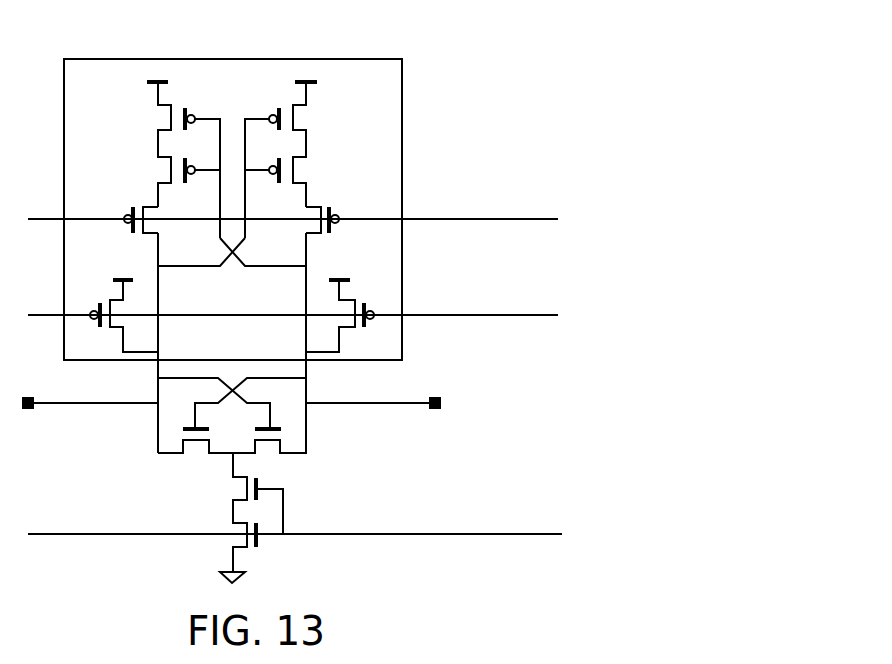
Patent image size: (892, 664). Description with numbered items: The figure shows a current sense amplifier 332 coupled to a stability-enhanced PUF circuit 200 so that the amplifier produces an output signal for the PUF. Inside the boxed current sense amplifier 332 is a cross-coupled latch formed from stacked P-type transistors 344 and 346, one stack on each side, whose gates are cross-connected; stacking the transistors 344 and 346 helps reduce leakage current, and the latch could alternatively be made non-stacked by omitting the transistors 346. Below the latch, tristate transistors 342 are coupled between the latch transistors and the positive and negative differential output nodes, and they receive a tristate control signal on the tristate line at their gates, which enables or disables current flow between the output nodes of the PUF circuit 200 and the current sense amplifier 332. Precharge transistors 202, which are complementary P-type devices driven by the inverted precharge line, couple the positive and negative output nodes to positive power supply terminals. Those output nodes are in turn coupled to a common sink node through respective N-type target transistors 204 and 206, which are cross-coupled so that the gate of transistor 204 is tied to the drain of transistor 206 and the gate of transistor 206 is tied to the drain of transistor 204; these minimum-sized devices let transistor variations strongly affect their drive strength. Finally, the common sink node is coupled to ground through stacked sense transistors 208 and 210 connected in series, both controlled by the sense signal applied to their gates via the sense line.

The PUF circuit 200 is at (443, 359).
The current sense amplifier 332 is at (335, 58).
The stacked transistors 344 is at (160, 115).
The stacked transistors 346 is at (160, 165).
The tristate transistors 342 is at (128, 207).
The precharge transistors 202 is at (107, 300).
The transistor 204 is at (192, 456).
The transistor 206 is at (270, 456).
The sense transistor 208 is at (238, 490).
The sense transistor 210 is at (233, 543).